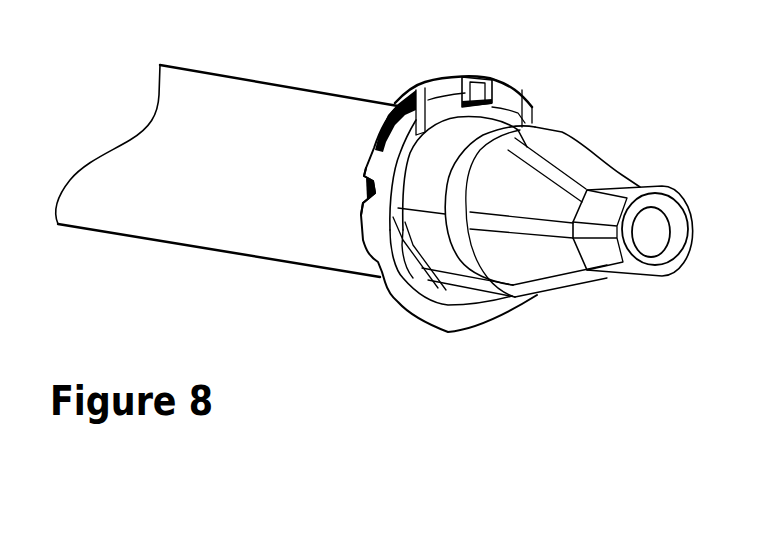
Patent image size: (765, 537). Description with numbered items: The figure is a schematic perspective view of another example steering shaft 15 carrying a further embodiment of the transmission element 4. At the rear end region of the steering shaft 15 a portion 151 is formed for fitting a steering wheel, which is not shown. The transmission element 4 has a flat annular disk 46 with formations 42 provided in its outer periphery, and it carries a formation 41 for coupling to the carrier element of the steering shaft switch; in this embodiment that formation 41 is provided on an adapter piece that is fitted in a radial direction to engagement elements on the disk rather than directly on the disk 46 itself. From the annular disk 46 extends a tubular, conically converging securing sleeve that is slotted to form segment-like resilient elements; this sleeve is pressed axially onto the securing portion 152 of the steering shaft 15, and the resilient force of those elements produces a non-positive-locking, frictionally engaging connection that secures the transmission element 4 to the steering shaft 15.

The transmission element 4 is at (548, 105).
The steering shaft 15 is at (282, 112).
The formation 41 is at (462, 77).
The formations 42 is at (362, 192).
The annular disk 46 is at (385, 153).
The portion for fitting a steering wheel 151 is at (548, 248).
The securing portion 152 is at (432, 243).